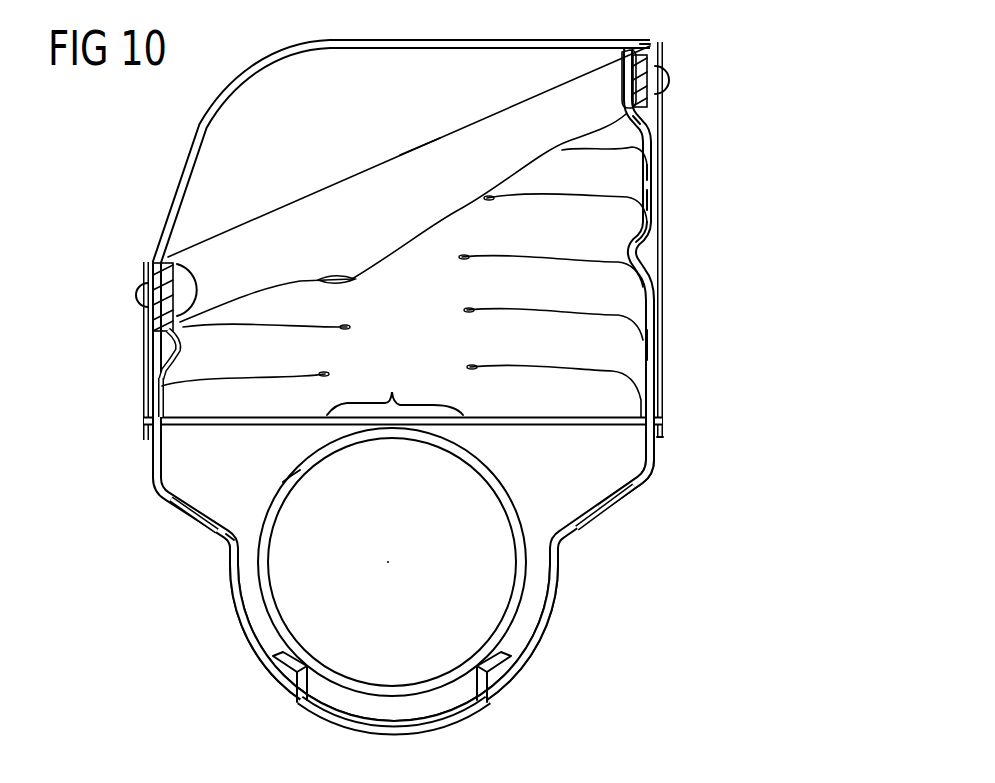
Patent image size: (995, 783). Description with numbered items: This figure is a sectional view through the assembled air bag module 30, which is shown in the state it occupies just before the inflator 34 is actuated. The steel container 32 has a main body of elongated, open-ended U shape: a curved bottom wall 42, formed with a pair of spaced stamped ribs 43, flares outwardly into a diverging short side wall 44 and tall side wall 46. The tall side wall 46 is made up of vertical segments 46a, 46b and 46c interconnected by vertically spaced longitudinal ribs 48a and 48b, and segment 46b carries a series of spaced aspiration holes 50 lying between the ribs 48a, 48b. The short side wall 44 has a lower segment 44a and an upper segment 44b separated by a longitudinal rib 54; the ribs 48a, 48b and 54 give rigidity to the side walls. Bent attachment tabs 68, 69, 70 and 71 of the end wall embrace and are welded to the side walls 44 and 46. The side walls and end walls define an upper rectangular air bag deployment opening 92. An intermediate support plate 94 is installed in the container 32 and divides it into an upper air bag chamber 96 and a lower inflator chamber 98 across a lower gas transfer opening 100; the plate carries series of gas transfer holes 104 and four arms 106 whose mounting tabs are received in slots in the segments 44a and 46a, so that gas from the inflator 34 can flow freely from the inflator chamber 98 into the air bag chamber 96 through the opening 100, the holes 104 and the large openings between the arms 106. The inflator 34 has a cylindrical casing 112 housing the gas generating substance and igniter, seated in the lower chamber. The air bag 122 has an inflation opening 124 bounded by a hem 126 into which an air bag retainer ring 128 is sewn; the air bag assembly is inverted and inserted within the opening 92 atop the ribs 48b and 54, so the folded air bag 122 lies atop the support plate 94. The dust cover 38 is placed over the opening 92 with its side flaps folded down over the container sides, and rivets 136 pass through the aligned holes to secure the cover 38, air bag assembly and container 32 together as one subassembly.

The air bag module 30 is at (112, 405).
The steel container 32 is at (578, 568).
The inflator 34 is at (268, 480).
The dust cover 38 is at (444, 40).
The curved bottom wall 42 is at (442, 723).
The stamped ribs 43 is at (506, 668).
The short side wall 44 is at (163, 491).
The lower segment of short side wall 44a is at (161, 388).
The upper segment of short side wall 44b is at (152, 272).
The tall side wall 46 is at (655, 462).
The lower segment of tall side wall 46a is at (648, 350).
The intermediate segment of tall side wall 46b is at (649, 172).
The top wall segment 46c is at (656, 95).
The longitudinal rib 48a is at (636, 268).
The longitudinal rib 48b is at (647, 138).
The aspiration holes 50 is at (652, 200).
The longitudinal rib 54 is at (174, 346).
The bent attachment tab 68 is at (664, 377).
The bent attachment tab 69 is at (628, 498).
The bent attachment tab 70 is at (144, 410).
The bent attachment tab 71 is at (188, 516).
The air bag deployment opening 92 is at (654, 44).
The intermediate support plate 94 is at (502, 408).
The upper air bag chamber 96 is at (212, 247).
The lower inflator chamber 98 is at (228, 536).
The gas transfer opening 100 is at (207, 417).
The gas transfer holes 104 is at (395, 386).
The arms 106 is at (652, 450).
The cylindrical casing 112 is at (511, 492).
The air bag 122 is at (664, 222).
The inflation opening 124 is at (191, 262).
The hem 126 is at (283, 230).
The air bag retainer ring 128 is at (624, 82).
The rivets 136 is at (140, 294).